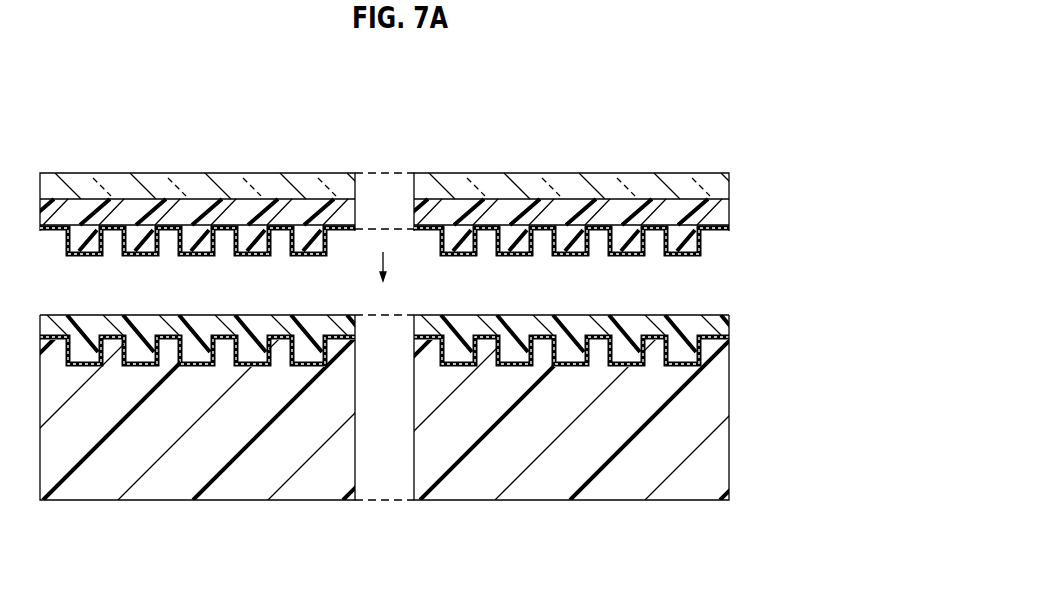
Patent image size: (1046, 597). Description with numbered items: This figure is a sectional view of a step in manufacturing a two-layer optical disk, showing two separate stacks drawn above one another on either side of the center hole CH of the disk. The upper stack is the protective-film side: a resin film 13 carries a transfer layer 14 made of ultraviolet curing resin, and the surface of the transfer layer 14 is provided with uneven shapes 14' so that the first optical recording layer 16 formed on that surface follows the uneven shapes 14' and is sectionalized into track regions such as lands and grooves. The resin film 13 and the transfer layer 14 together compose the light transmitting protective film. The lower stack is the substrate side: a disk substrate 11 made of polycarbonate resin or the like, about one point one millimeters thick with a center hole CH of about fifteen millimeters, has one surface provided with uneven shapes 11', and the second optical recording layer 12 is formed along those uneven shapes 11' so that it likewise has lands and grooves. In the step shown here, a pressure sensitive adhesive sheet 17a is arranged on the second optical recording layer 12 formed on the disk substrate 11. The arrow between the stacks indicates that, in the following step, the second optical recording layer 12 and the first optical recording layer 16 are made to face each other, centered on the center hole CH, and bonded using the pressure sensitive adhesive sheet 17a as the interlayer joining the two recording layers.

The disk substrate 11 is at (445, 428).
The uneven shapes 11' is at (580, 428).
The second optical recording layer 12 is at (730, 340).
The resin film 13 is at (730, 181).
The transfer layer 14 is at (409, 190).
The uneven shapes 14' is at (563, 190).
The first optical recording layer 16 is at (730, 231).
The pressure sensitive adhesive sheet 17a is at (730, 322).
The center hole CH is at (414, 192).